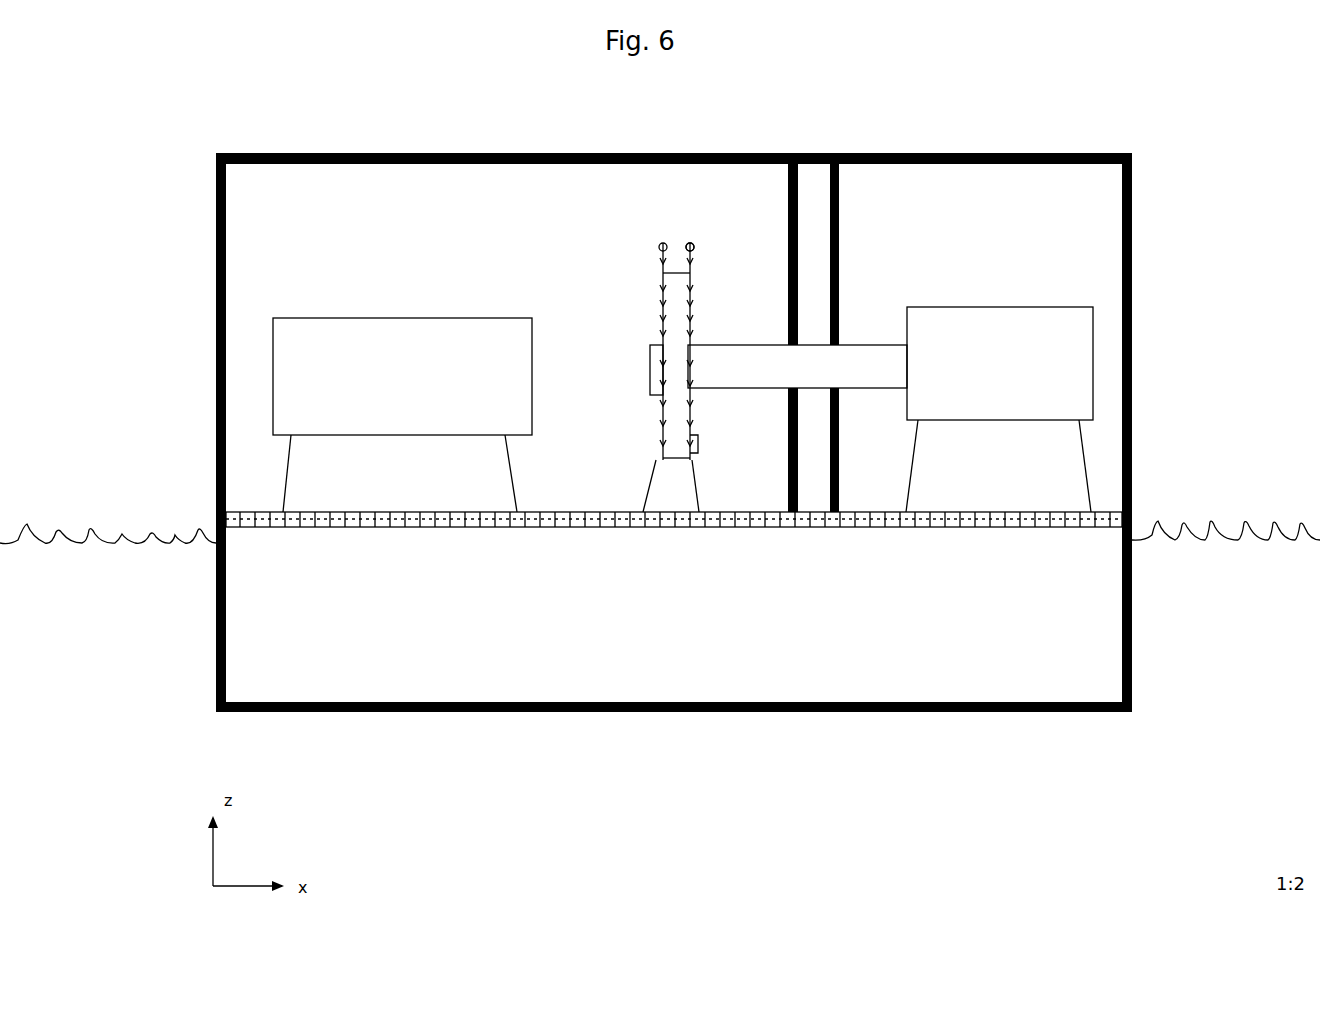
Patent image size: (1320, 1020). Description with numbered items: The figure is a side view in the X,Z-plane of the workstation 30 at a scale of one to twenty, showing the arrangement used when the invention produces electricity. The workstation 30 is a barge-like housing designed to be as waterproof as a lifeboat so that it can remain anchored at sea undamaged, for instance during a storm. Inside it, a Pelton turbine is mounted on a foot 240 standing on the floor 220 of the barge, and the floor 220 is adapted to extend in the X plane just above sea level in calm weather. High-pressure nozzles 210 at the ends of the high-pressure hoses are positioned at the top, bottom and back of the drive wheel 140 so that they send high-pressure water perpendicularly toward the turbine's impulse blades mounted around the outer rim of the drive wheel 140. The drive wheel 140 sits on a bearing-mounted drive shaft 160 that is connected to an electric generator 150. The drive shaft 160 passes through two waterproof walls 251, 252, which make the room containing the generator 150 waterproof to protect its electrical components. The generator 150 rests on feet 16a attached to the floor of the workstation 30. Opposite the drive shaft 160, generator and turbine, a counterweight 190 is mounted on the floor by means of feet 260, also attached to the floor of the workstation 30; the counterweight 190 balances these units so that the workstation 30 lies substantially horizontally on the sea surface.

The workstation 30 is at (1154, 208).
The drive wheel 140 is at (650, 290).
The electric generator 150 is at (1019, 294).
The drive shaft 160 is at (875, 336).
The feet 16a is at (908, 486).
The counterweight 190 is at (322, 302).
The high-pressure nozzles 210 is at (694, 234).
The floor 220 is at (709, 542).
The foot 240 is at (633, 493).
The waterproof wall 251 is at (848, 218).
The waterproof wall 252 is at (776, 205).
The feet 260 is at (539, 461).